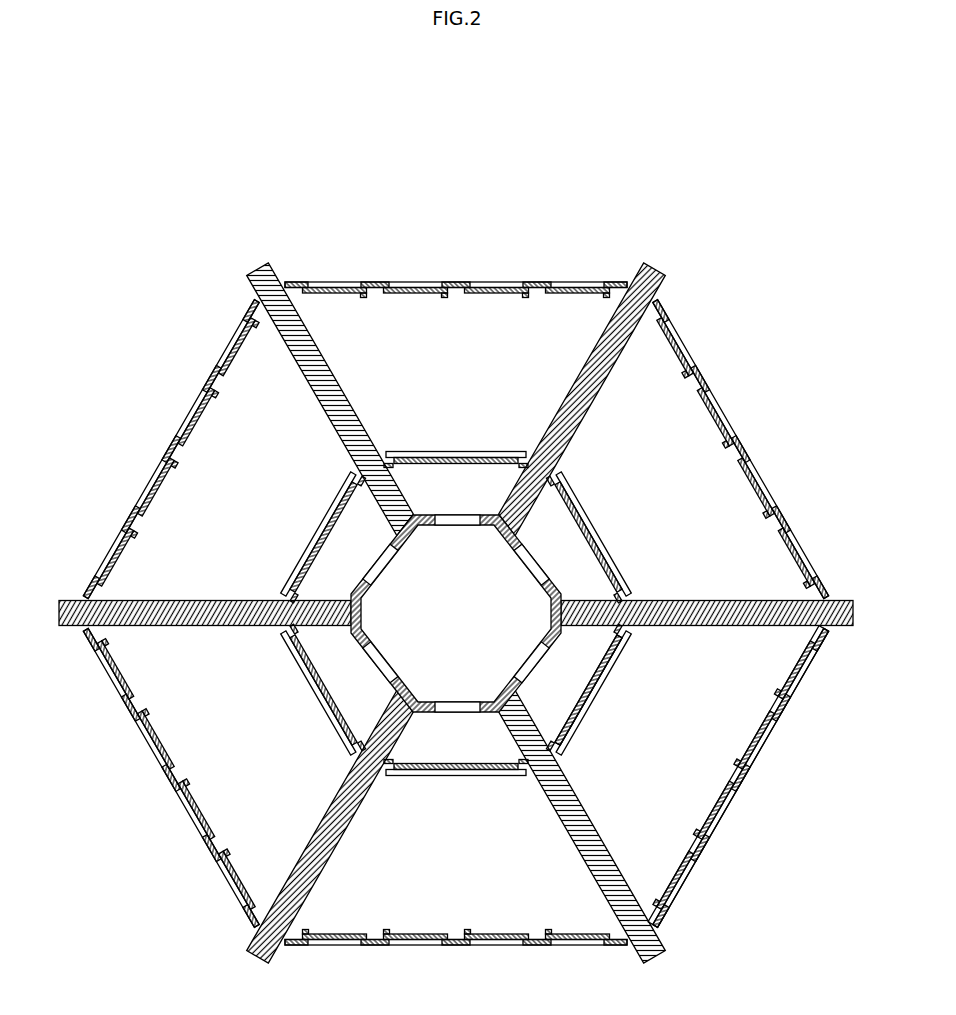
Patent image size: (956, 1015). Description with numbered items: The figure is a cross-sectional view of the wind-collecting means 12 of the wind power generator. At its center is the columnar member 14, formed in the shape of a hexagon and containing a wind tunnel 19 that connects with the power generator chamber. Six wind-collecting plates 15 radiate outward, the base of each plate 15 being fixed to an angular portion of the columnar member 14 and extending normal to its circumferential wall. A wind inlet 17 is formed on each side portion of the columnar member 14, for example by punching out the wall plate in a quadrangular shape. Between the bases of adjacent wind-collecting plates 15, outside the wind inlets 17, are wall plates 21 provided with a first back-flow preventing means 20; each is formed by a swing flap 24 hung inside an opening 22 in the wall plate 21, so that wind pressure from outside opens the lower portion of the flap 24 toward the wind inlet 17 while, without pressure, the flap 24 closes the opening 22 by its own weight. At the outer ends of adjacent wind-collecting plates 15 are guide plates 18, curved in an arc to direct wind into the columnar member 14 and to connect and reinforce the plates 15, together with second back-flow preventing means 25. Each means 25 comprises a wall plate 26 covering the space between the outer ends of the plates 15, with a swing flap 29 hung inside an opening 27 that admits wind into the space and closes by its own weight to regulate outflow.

The wind-collecting means 12 is at (476, 121).
The columnar member 14 is at (432, 508).
The wind-collecting plate 15 is at (290, 385).
The wind inlet 17 is at (455, 701).
The guide plate 18 is at (465, 609).
The wind tunnel 19 is at (463, 569).
The first back-flow preventing means 20 is at (466, 646).
The wall plate 21 is at (620, 643).
The opening 22 is at (590, 705).
The swing flap 24 is at (345, 535).
The second back-flow preventing means 25 is at (716, 848).
The wall plate 26 is at (700, 383).
The opening 27 is at (773, 498).
The swing flap 29 is at (167, 472).